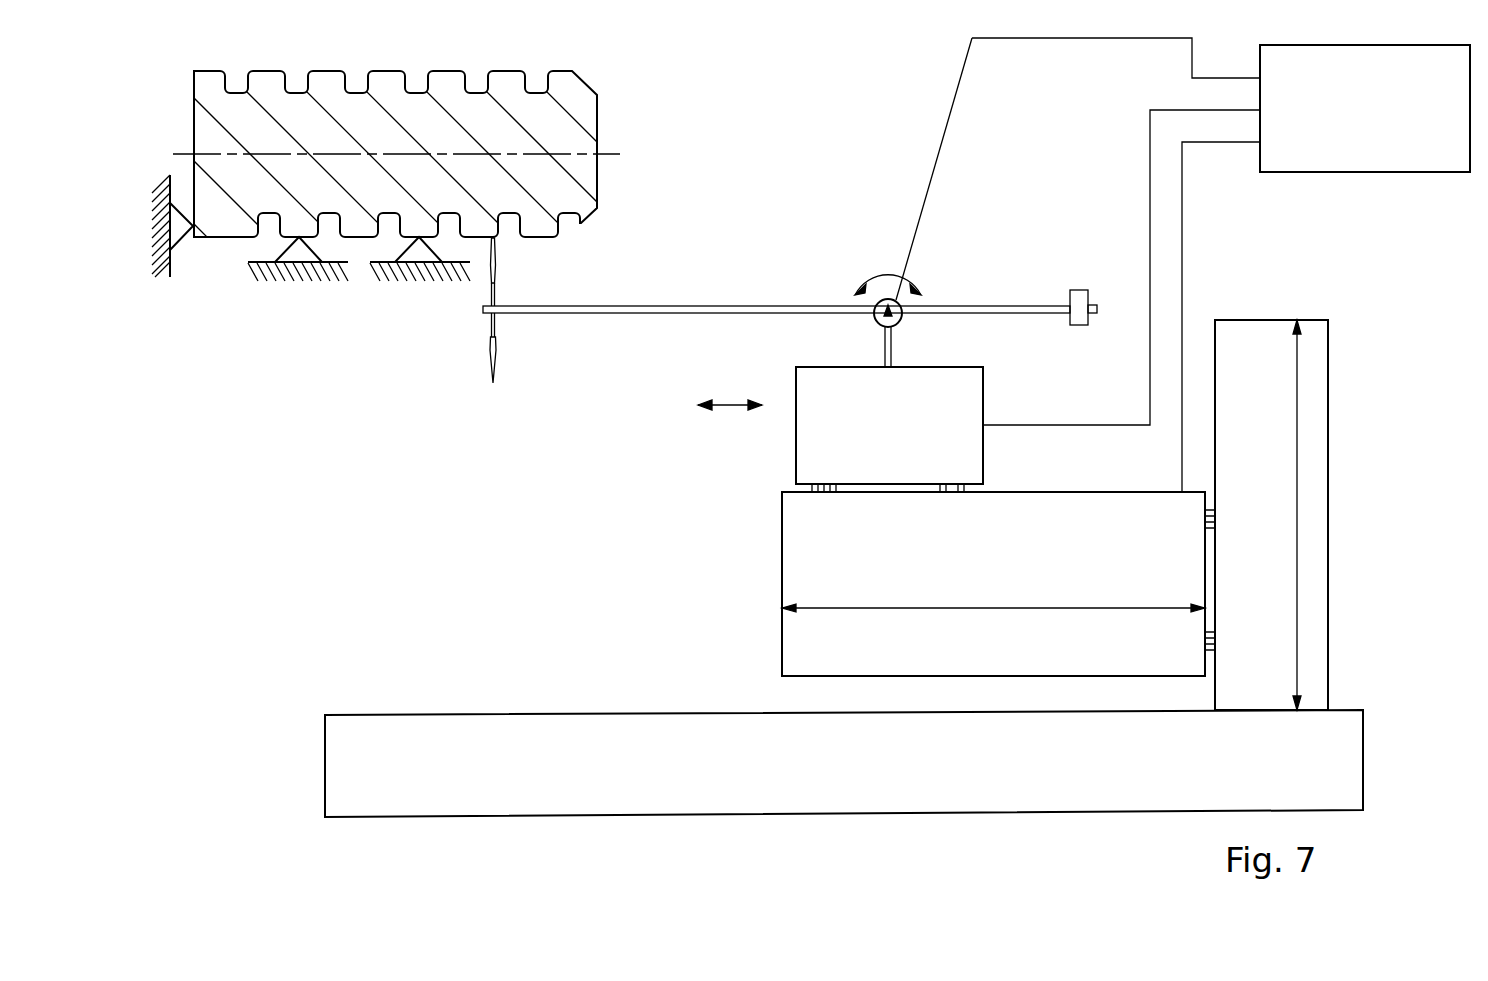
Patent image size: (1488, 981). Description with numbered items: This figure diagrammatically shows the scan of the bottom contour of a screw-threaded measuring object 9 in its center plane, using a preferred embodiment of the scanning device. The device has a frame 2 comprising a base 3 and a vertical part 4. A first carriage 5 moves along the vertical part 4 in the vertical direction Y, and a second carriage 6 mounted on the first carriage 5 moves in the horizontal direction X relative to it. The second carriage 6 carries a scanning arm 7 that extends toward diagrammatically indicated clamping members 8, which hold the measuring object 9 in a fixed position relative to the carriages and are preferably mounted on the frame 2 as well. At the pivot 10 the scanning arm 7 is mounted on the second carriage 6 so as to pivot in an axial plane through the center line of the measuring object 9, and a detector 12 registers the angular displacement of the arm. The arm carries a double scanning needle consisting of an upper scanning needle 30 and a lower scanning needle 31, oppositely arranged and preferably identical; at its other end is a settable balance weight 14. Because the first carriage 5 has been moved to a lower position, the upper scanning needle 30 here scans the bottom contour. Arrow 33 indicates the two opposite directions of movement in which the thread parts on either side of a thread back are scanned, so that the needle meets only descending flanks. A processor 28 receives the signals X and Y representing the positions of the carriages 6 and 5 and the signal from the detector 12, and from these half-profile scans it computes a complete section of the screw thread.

The frame 2 is at (874, 568).
The base 3 is at (1045, 778).
The vertical part 4 is at (1248, 665).
The first carriage 5 is at (1111, 656).
The second carriage 6 is at (940, 462).
The scanning arm 7 is at (695, 305).
The clamping members 8 is at (155, 277).
The measuring object 9 is at (222, 95).
The pivot mounting of the scanning arm 10 is at (887, 308).
The detector 12 is at (882, 300).
The settable balance weight 14 is at (1080, 300).
The processor 28 is at (1362, 152).
The upper scanning needle 30 is at (495, 263).
The lower scanning needle 31 is at (495, 347).
The arrow indicating directions of movement 33 is at (732, 407).